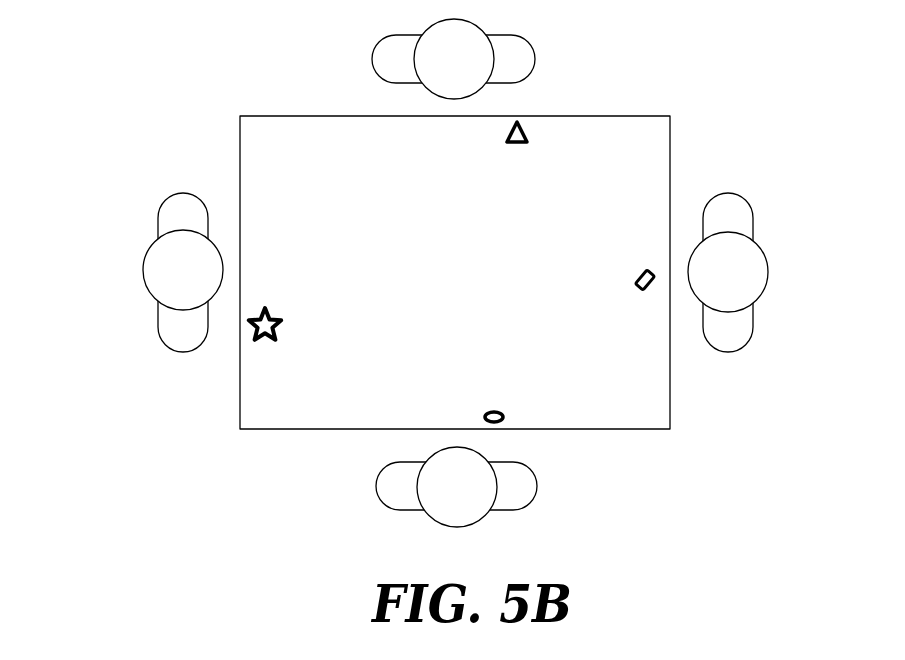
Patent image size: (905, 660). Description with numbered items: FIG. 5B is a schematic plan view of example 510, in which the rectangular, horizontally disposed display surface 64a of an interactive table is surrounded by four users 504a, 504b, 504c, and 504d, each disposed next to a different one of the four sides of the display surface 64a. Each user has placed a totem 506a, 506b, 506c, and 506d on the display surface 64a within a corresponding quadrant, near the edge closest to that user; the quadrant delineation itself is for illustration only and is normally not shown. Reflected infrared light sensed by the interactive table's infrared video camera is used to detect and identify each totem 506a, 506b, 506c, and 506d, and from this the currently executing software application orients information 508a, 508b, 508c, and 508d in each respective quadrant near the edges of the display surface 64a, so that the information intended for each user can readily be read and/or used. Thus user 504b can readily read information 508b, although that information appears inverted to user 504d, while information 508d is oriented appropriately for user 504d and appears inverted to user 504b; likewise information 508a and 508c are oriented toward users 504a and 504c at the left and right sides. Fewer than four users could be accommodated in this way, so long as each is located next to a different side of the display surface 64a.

The display surface 64a is at (240, 155).
The user 504a is at (143, 268).
The user 504b is at (377, 486).
The user 504c is at (768, 268).
The user 504d is at (373, 62).
The totem 506a is at (260, 339).
The totem 506b is at (503, 418).
The totem 506c is at (652, 287).
The totem 506d is at (524, 128).
The information 508a is at (287, 300).
The information 508b is at (490, 393).
The information 508c is at (602, 233).
The information 508d is at (492, 153).
The example 510 is at (740, 497).